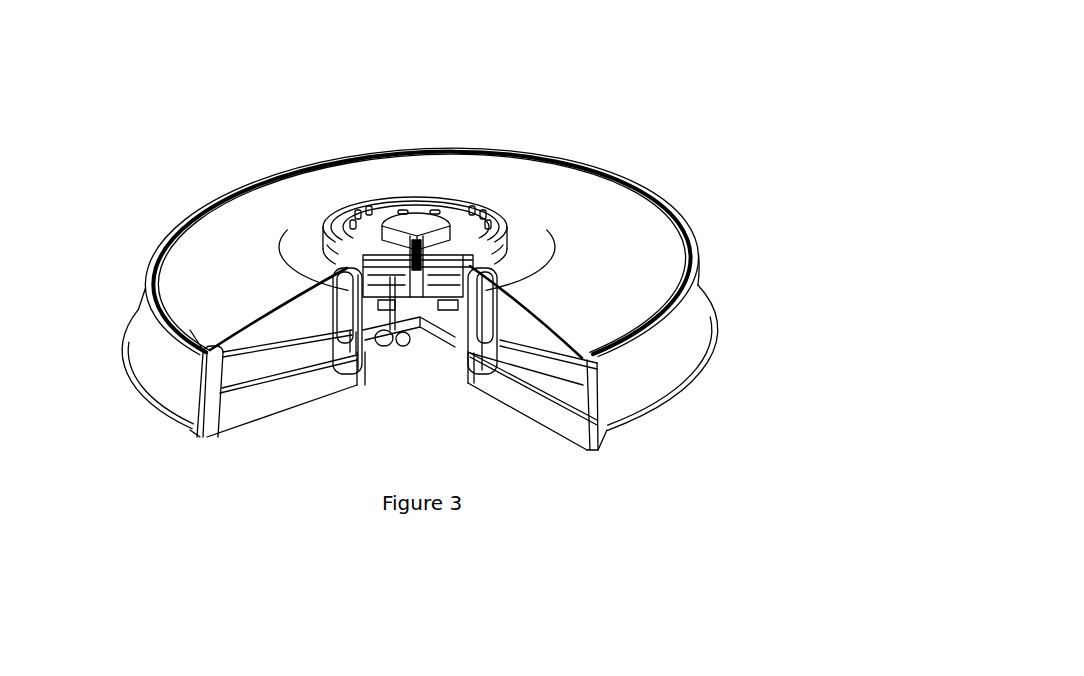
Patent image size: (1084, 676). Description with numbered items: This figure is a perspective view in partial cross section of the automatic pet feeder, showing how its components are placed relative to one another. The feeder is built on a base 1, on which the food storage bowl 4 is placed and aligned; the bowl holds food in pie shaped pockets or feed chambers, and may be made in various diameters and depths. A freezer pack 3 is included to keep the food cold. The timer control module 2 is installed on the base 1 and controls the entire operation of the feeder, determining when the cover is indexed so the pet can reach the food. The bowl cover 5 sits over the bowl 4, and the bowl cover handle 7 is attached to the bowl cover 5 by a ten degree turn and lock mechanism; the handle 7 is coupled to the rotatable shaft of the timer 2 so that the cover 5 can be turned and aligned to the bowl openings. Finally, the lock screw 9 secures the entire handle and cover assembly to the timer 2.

The base 1 is at (612, 440).
The timer control module 2 is at (437, 373).
The freezer pack 3 is at (510, 385).
The food storage bowl 4 is at (620, 380).
The bowl cover 5 is at (615, 185).
The bowl cover handle 7 is at (495, 203).
The lock screw 9 is at (445, 205).